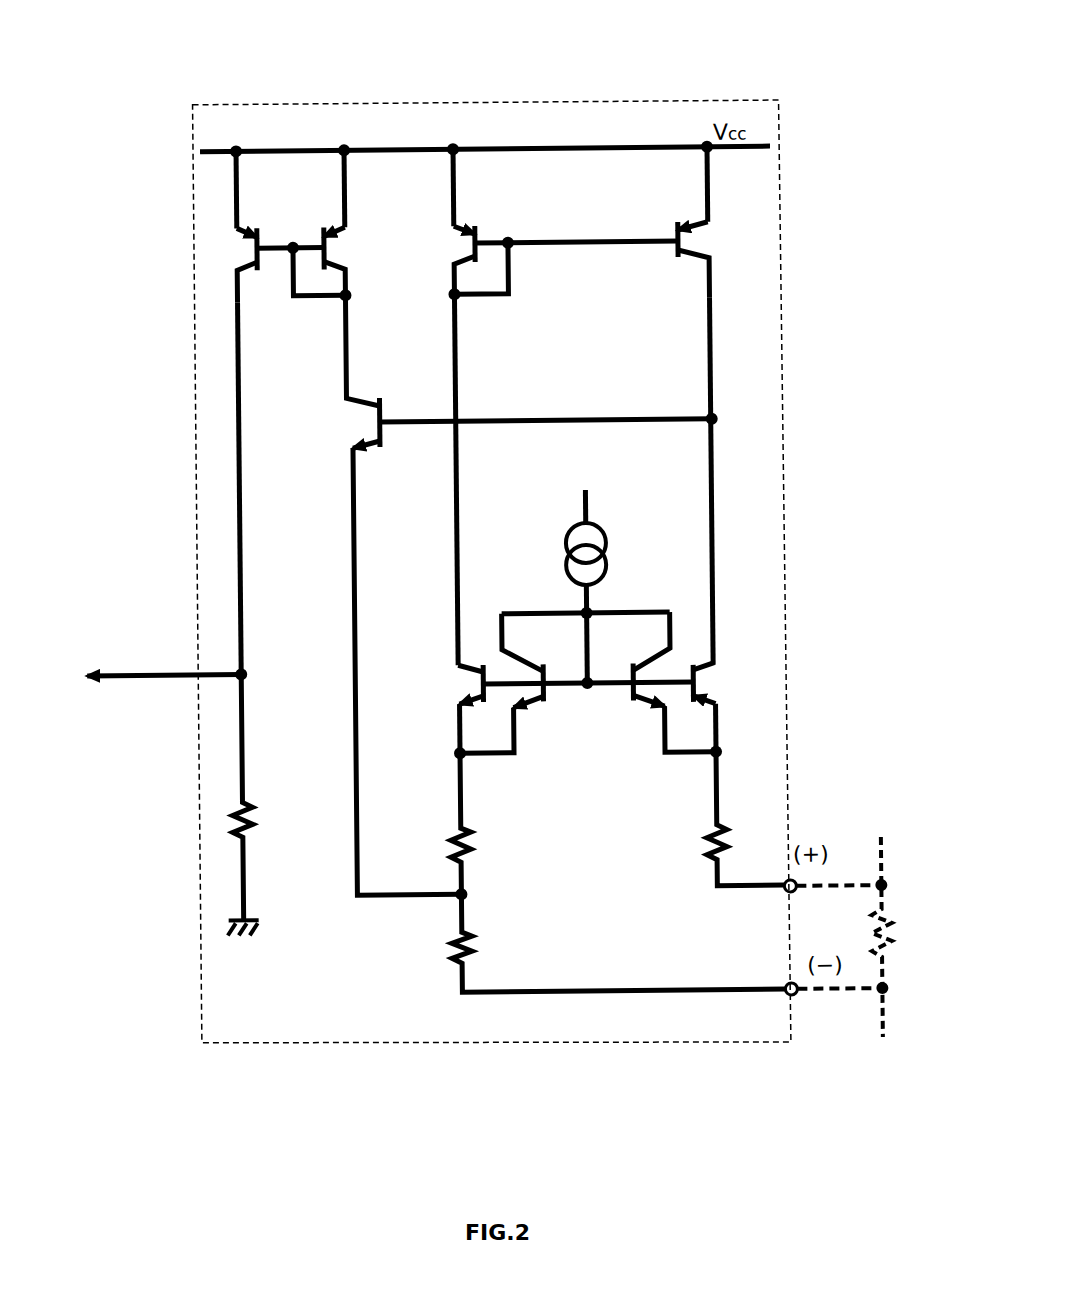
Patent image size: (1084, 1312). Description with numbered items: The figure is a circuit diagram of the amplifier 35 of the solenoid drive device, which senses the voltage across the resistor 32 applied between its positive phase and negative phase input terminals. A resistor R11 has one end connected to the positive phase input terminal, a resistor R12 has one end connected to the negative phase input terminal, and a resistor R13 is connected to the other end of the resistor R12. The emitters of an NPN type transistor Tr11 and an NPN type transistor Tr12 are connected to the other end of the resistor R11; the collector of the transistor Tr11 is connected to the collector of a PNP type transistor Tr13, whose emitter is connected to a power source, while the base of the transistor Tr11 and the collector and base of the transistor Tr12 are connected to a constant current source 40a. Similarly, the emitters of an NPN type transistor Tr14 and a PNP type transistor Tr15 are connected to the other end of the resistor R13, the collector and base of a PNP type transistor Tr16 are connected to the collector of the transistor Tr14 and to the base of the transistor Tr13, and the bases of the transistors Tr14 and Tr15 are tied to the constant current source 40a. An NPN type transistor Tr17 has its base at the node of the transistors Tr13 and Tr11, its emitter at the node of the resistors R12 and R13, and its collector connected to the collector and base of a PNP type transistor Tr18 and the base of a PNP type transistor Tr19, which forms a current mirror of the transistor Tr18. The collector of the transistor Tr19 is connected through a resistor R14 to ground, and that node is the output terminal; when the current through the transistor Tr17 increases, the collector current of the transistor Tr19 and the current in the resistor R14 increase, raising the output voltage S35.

The amplifier 35 is at (530, 101).
The NPN type transistor Tr11 is at (699, 692).
The NPN type transistor Tr12 is at (633, 701).
The PNP type transistor Tr13 is at (700, 247).
The NPN type transistor Tr14 is at (467, 668).
The PNP type transistor Tr15 is at (528, 706).
The PNP type transistor Tr16 is at (461, 257).
The NPN type transistor Tr17 is at (371, 444).
The PNP type transistor Tr18 is at (333, 256).
The PNP type transistor Tr19 is at (248, 238).
The resistor R11 is at (719, 824).
The resistor R12 is at (471, 945).
The resistor R13 is at (452, 845).
The resistor R14 is at (247, 813).
The constant current source 40a is at (600, 529).
The resistor 32 is at (896, 939).
The output voltage S35 is at (167, 660).